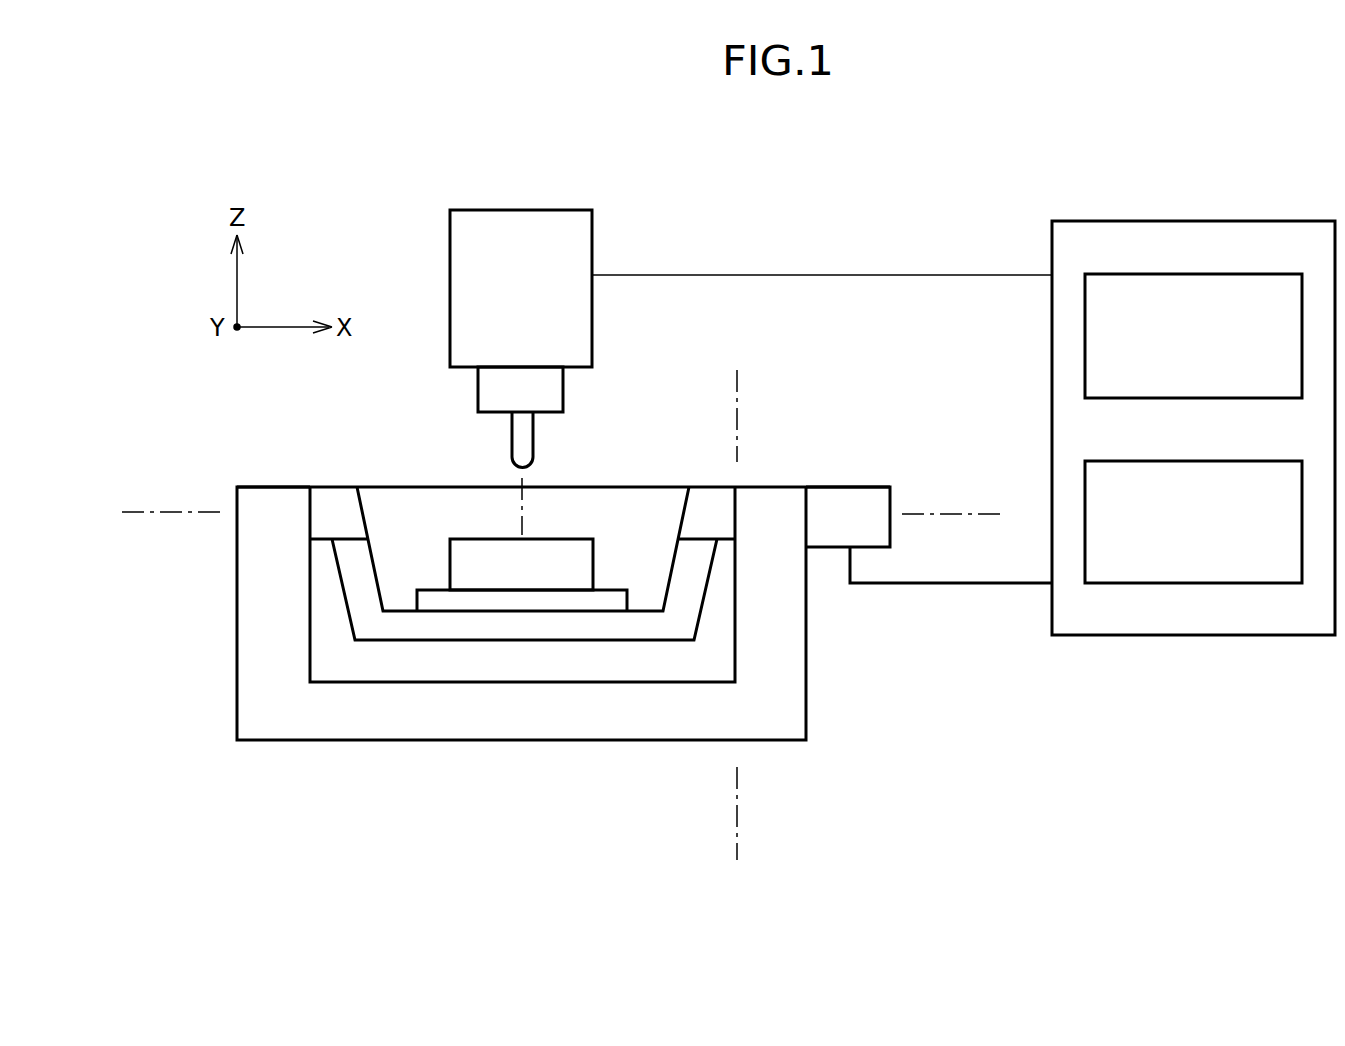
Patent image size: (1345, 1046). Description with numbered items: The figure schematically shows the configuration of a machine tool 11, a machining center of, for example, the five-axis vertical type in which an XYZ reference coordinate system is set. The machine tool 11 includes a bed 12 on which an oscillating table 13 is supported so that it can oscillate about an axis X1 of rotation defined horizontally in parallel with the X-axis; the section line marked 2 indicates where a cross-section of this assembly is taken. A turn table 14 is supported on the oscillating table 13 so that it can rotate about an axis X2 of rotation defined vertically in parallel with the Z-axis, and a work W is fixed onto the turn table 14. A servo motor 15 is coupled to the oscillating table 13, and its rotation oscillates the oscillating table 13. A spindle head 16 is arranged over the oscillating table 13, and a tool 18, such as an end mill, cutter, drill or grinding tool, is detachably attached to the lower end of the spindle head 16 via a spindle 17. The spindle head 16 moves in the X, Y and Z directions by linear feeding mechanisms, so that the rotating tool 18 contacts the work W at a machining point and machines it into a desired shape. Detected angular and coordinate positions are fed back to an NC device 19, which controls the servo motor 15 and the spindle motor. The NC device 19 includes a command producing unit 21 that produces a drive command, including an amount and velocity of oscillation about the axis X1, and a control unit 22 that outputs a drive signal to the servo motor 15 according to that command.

The section line 2 is at (756, 839).
The machine tool 11 is at (837, 217).
The bed 12 is at (237, 638).
The oscillating table 13 is at (685, 497).
The turn table 14 is at (614, 590).
The servo motor 15 is at (854, 487).
The spindle head 16 is at (450, 232).
The spindle 17 is at (478, 392).
The tool 18 is at (512, 445).
The NC device 19 is at (1257, 221).
The command producing unit 21 is at (1205, 274).
The control unit 22 is at (1200, 461).
The work W is at (462, 539).
The axis of rotation X1 is at (990, 513).
The axis of rotation X2 is at (530, 496).